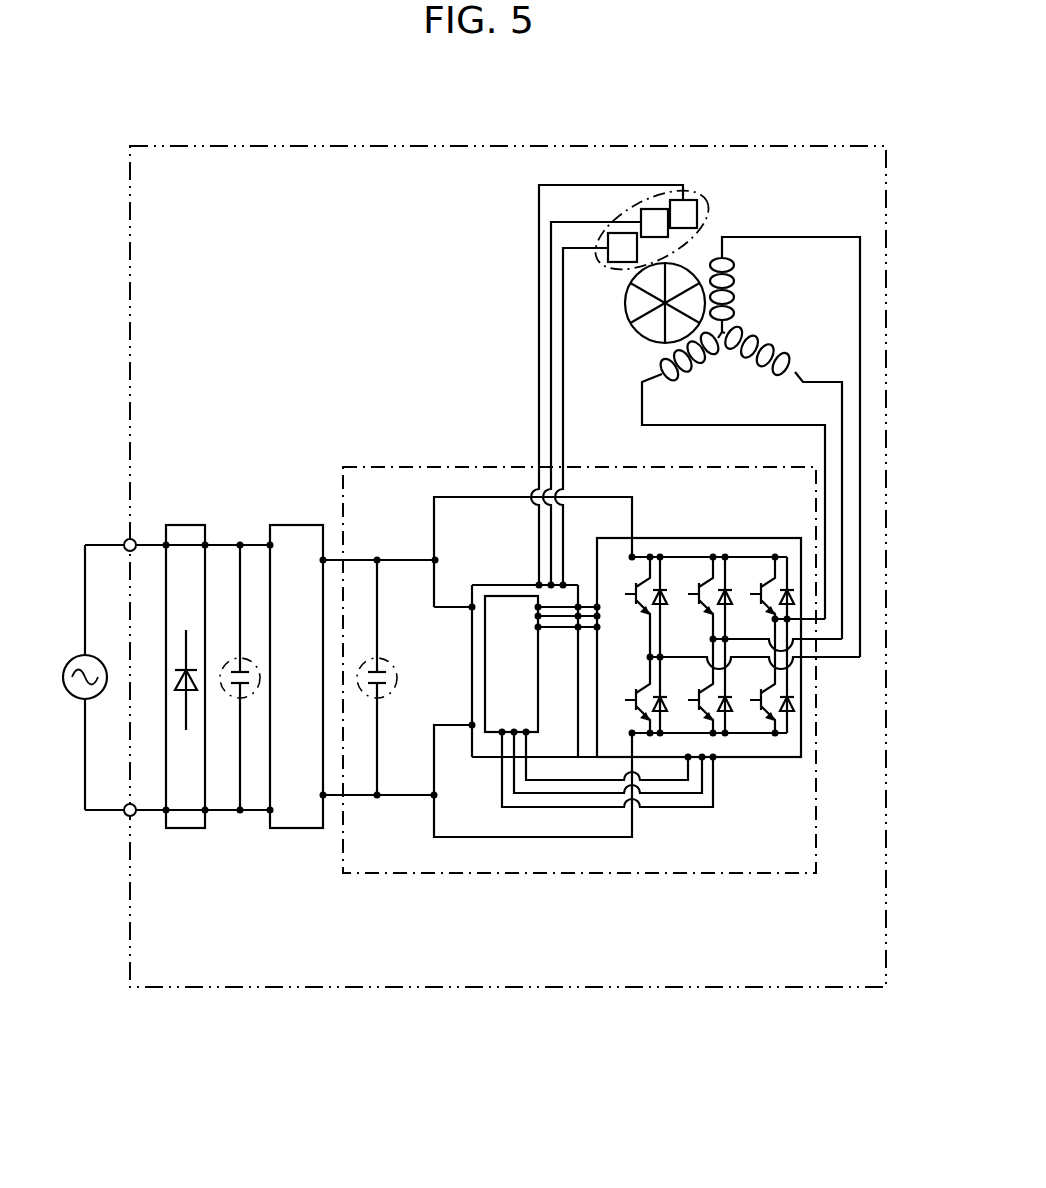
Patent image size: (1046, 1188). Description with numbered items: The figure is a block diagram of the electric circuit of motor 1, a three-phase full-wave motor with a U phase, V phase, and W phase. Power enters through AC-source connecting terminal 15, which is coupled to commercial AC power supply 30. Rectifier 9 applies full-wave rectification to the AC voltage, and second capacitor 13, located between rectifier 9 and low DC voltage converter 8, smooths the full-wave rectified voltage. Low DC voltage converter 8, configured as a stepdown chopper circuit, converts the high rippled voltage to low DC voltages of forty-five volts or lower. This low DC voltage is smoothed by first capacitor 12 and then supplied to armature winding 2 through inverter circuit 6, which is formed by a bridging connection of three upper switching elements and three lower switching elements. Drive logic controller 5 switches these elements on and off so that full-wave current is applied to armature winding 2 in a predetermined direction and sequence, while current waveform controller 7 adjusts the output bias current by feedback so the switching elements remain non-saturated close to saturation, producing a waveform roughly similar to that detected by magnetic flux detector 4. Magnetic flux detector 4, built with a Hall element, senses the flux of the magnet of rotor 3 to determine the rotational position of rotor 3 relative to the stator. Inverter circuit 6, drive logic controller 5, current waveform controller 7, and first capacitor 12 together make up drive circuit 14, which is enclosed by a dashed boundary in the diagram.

The motor 1 is at (505, 146).
The armature winding 2 is at (700, 350).
The rotor 3 is at (665, 303).
The magnetic flux detector 4 is at (698, 196).
The drive logic controller 5 is at (558, 745).
The inverter circuit 6 is at (801, 735).
The current waveform controller 7 is at (492, 717).
The low DC voltage converter 8 is at (310, 525).
The rectifier 9 is at (190, 828).
The first capacitor 12 is at (388, 660).
The second capacitor 13 is at (231, 655).
The drive circuit 14 is at (437, 873).
The AC-source connecting terminal 15 is at (126, 540).
The AC power supply 30 is at (78, 652).